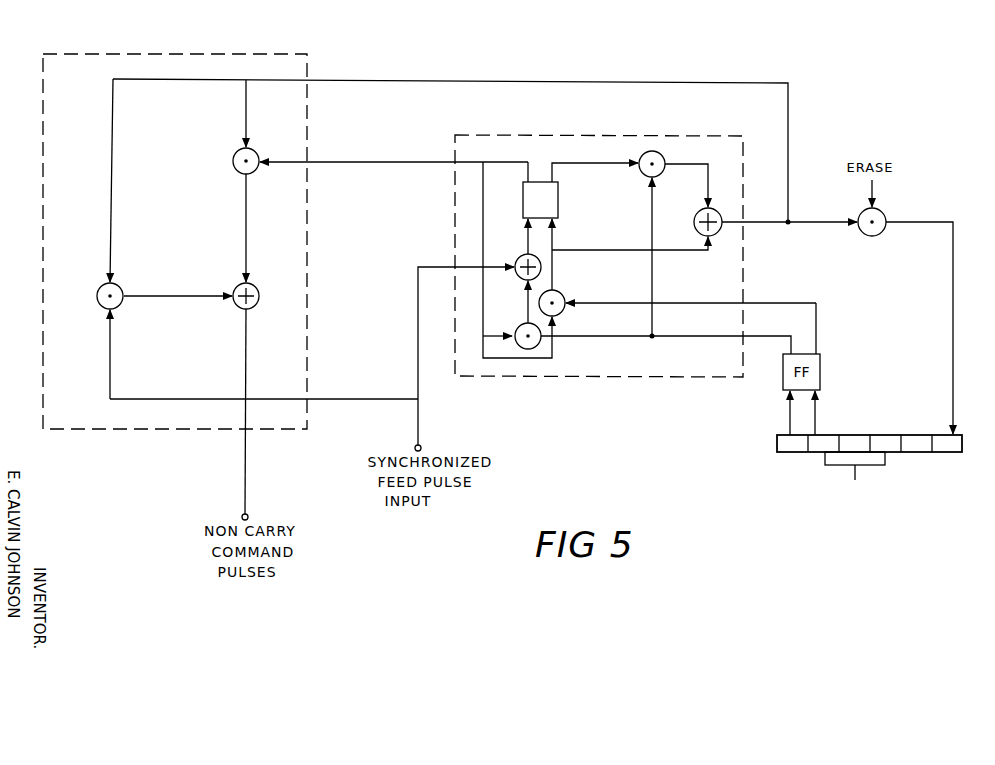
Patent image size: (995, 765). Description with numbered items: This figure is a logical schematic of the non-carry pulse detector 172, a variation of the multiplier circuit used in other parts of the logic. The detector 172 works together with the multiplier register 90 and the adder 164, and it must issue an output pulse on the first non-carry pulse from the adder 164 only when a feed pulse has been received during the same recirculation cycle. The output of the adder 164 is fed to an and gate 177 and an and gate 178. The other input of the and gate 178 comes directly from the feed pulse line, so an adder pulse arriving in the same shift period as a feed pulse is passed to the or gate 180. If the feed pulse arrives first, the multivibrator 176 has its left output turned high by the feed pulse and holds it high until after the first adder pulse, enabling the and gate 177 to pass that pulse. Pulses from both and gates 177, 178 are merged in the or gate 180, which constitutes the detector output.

The non-carry pulse detector 172 is at (297, 56).
The adder 164 is at (700, 137).
The multivibrator 176 is at (559, 206).
The and gate 177 is at (234, 154).
The and gate 178 is at (98, 289).
The or gate 180 is at (234, 289).
The multiplier register 90 is at (913, 452).